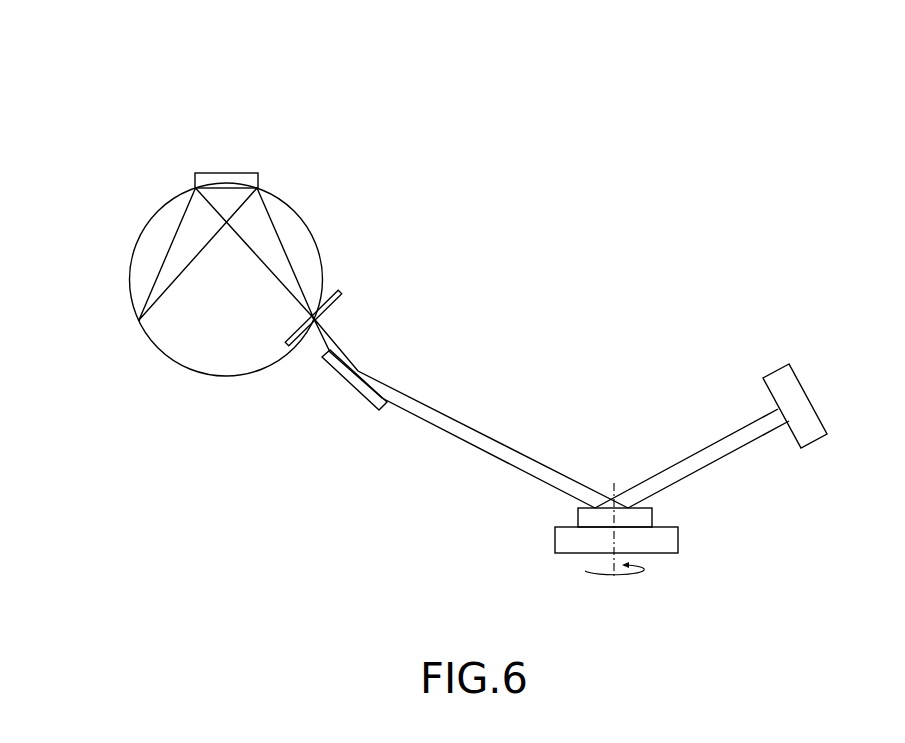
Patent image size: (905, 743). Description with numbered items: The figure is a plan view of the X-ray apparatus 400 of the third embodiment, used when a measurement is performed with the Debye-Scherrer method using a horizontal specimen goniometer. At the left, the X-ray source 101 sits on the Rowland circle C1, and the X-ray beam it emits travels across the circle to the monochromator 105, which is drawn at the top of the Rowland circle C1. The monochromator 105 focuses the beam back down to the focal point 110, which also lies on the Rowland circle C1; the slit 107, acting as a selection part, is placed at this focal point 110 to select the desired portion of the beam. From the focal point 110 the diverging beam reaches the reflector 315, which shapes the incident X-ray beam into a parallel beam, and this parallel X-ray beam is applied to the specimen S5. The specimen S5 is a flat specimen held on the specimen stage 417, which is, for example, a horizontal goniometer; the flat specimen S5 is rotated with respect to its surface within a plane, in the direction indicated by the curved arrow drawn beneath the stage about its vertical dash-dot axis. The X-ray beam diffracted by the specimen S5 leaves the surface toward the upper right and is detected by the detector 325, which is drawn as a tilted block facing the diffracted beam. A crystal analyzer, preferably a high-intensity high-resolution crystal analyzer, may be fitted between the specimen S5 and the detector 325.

The X-ray apparatus 400 is at (440, 82).
The Rowland circle C1 is at (145, 226).
The monochromator 105 is at (222, 172).
The X-ray source 101 is at (137, 320).
The slit 107 is at (341, 294).
The focal point 110 is at (317, 320).
The reflector 315 is at (362, 391).
The detector 325 is at (822, 440).
The specimen S5 is at (577, 515).
The specimen stage 417 is at (556, 545).